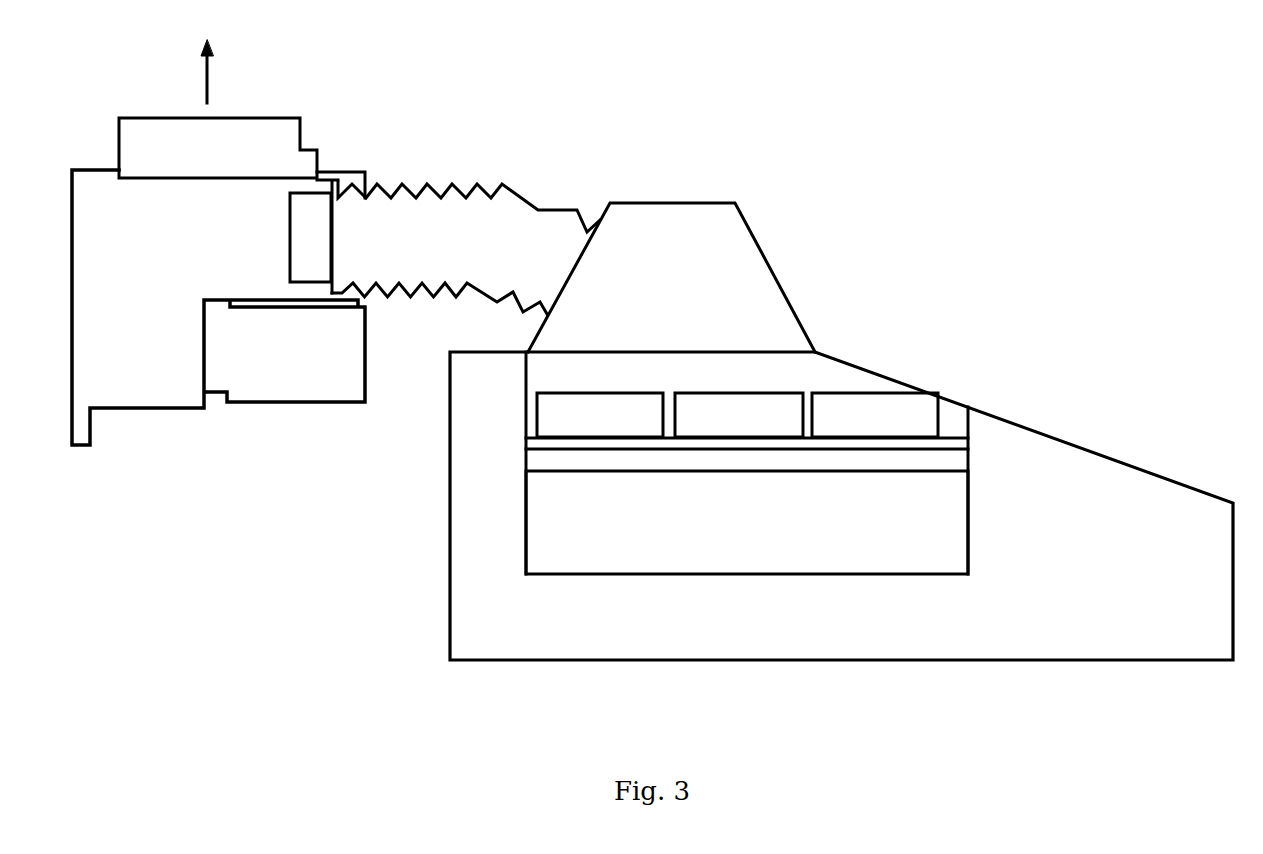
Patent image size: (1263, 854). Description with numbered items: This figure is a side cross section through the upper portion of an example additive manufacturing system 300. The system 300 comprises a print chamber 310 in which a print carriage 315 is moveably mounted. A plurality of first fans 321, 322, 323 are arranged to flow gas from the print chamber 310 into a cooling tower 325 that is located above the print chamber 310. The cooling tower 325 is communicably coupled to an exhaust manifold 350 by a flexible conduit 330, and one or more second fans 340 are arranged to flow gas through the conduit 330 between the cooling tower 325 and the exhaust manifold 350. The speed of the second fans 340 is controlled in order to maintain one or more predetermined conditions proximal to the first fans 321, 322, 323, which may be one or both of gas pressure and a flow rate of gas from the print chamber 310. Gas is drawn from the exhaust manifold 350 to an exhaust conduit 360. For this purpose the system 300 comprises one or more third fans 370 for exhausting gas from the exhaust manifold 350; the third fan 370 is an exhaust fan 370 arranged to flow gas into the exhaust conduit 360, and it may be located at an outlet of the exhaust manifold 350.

The additive manufacturing system 300 is at (247, 583).
The print chamber 310 is at (841, 506).
The print carriage 315 is at (747, 522).
The first fan 321 is at (600, 415).
The first fan 322 is at (739, 415).
The first fan 323 is at (875, 415).
The cooling tower 325 is at (671, 277).
The flexible conduit 330 is at (466, 248).
The second fan 340 is at (312, 219).
The exhaust manifold 350 is at (218, 307).
The exhaust conduit 360 is at (232, 71).
The exhaust fan 370 is at (218, 148).